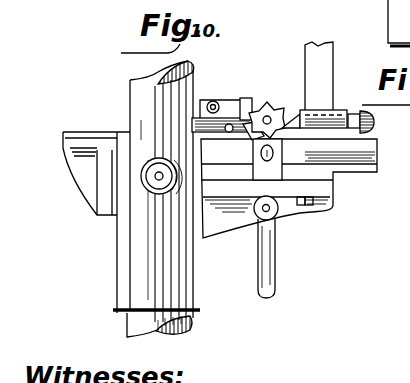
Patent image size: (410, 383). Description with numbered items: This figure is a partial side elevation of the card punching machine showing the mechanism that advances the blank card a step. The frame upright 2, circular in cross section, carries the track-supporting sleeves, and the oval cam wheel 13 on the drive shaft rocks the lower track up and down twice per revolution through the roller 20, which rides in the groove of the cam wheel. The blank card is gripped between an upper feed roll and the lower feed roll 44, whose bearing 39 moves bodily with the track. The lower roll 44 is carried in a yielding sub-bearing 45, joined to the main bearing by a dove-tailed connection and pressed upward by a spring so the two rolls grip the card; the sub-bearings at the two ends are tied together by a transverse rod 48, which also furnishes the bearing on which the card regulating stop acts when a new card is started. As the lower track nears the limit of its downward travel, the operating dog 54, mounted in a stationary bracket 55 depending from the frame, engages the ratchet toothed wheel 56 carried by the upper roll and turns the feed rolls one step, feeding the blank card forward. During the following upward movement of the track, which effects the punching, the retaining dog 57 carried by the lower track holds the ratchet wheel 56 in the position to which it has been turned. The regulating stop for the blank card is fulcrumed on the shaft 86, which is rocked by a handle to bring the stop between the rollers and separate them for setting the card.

The upright 2 is at (142, 98).
The cam wheel 13 is at (253, 0).
The roller 20 is at (150, 190).
The bearing 39 is at (270, 172).
The lower feed roll 44 is at (399, 208).
The sub-bearing 45 is at (409, 221).
The rod 48 is at (409, 231).
The operating dog 54 is at (375, 122).
The stationary bracket 55 is at (323, 85).
The ratchet toothed wheel 56 is at (270, 106).
The retaining dog 57 is at (244, 117).
The shaft 86 is at (262, 212).